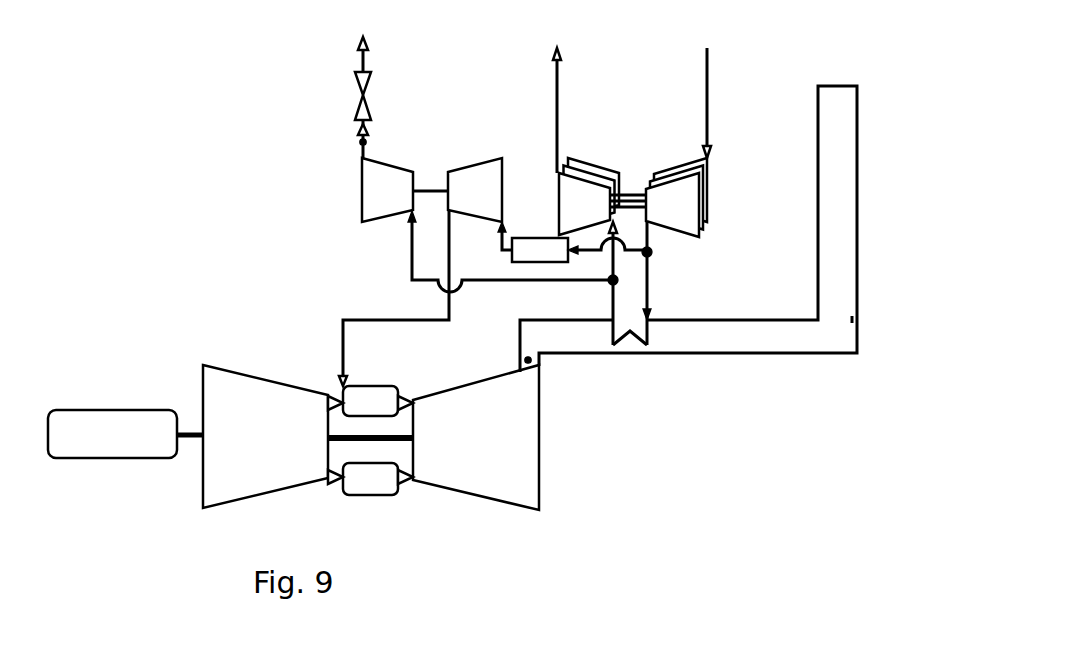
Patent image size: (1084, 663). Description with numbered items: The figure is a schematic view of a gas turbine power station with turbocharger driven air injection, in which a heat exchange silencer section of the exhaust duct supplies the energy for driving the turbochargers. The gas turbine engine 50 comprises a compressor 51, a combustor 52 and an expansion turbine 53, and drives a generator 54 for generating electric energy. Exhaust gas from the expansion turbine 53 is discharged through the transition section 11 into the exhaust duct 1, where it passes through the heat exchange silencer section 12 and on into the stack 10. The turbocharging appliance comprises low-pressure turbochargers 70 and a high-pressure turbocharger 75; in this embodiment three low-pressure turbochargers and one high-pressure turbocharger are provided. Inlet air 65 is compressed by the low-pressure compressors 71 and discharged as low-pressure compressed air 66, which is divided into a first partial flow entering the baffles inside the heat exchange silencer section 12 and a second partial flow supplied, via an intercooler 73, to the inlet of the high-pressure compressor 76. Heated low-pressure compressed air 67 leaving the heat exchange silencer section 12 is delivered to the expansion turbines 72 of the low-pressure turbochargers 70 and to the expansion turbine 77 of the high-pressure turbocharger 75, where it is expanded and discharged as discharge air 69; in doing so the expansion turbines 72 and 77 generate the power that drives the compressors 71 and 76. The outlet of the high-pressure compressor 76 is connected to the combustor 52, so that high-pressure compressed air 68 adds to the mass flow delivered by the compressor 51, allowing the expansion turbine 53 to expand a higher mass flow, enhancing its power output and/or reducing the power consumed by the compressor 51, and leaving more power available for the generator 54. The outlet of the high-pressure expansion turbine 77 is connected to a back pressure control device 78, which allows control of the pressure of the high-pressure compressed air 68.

The exhaust duct 1 is at (732, 229).
The stack 10 is at (857, 152).
The transition section 11 is at (538, 367).
The heat exchange silencer section 12 is at (629, 345).
The gas turbine engine 50 is at (293, 396).
The compressor 51 is at (241, 447).
The combustor 52 is at (356, 414).
The expansion turbine 53 is at (461, 447).
The generator 54 is at (98, 447).
The inlet air 65 is at (707, 88).
The low-pressure compressed air 66 is at (649, 288).
The heated low-pressure compressed air 67 is at (410, 251).
The high-pressure compressed air 68 is at (341, 333).
The discharge air 69 is at (361, 142).
The low-pressure turbochargers 70 is at (664, 183).
The compressors of the low-pressure turbochargers 71 is at (655, 222).
The expansion turbines of the low-pressure turbochargers 72 is at (567, 222).
The intercooler 73 is at (538, 243).
The high-pressure turbocharger 75 is at (372, 190).
The high-pressure compressor 76 is at (459, 206).
The expansion turbine of the high-pressure turbocharger 77 is at (371, 206).
The back pressure control device 78 is at (361, 96).